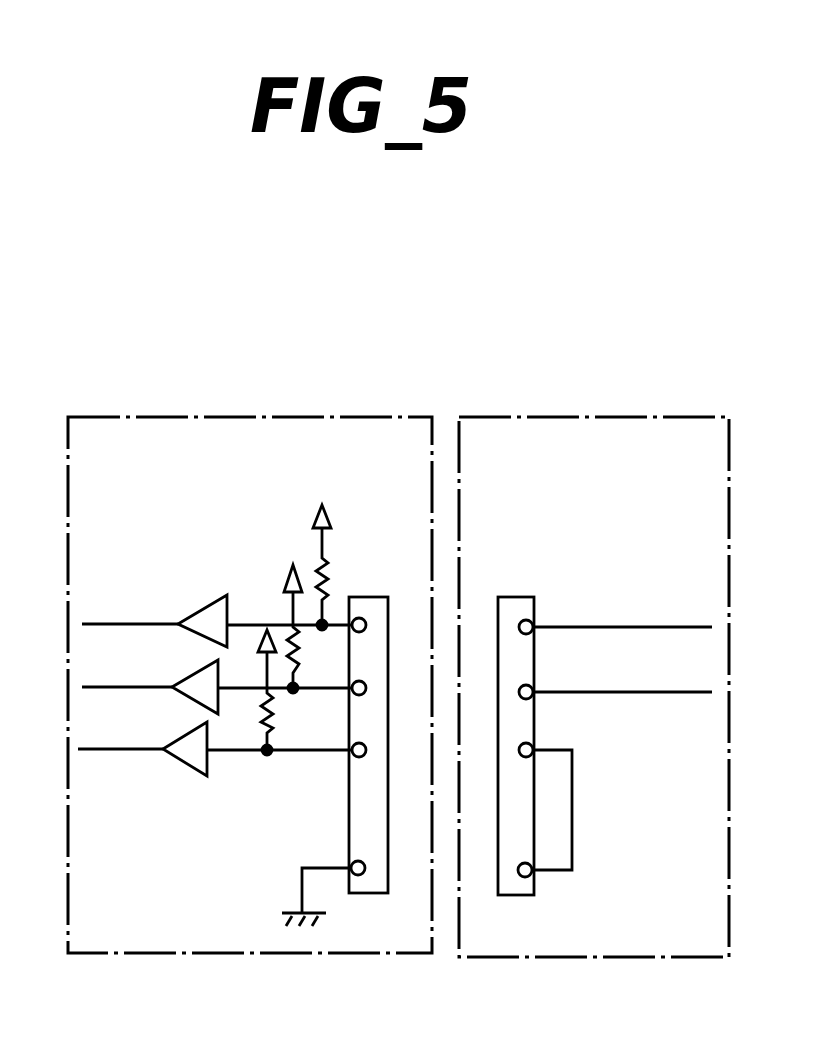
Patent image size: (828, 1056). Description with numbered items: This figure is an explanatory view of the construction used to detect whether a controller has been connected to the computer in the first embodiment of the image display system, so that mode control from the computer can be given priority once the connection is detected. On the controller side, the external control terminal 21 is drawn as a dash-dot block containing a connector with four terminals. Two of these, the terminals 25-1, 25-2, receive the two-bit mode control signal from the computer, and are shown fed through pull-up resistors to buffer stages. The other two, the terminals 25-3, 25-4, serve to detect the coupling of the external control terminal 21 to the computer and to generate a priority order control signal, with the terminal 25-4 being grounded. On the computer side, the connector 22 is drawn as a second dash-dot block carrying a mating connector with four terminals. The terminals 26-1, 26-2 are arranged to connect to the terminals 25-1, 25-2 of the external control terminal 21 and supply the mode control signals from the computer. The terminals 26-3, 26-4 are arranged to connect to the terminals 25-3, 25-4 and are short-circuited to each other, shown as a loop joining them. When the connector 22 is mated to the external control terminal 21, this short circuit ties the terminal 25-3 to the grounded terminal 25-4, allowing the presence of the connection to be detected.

The external control terminal 21 is at (283, 417).
The connector 22 is at (608, 418).
The terminal 25-1 is at (362, 618).
The terminal 25-2 is at (352, 694).
The terminal 25-3 is at (355, 758).
The terminal 25-4 is at (359, 876).
The terminal 26-1 is at (531, 620).
The terminal 26-2 is at (531, 700).
The terminal 26-3 is at (530, 758).
The terminal 26-4 is at (523, 878).